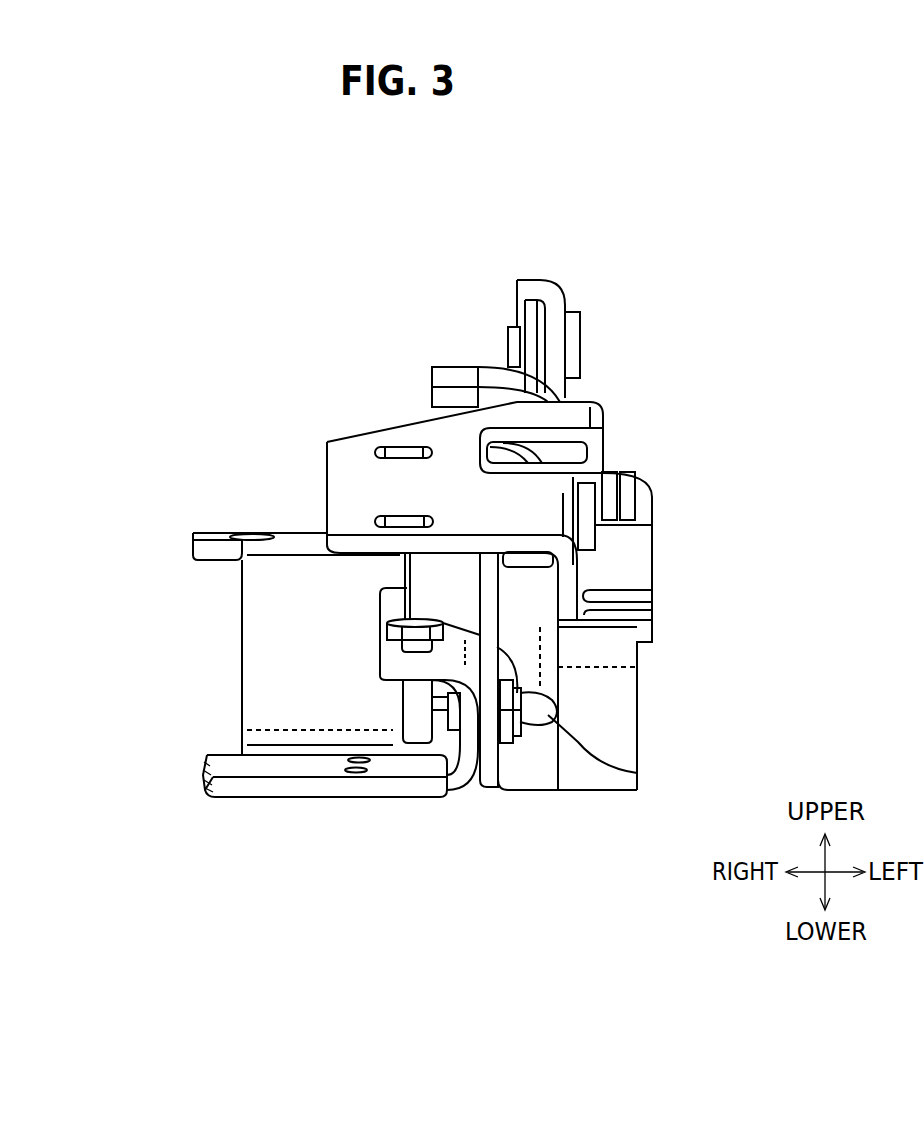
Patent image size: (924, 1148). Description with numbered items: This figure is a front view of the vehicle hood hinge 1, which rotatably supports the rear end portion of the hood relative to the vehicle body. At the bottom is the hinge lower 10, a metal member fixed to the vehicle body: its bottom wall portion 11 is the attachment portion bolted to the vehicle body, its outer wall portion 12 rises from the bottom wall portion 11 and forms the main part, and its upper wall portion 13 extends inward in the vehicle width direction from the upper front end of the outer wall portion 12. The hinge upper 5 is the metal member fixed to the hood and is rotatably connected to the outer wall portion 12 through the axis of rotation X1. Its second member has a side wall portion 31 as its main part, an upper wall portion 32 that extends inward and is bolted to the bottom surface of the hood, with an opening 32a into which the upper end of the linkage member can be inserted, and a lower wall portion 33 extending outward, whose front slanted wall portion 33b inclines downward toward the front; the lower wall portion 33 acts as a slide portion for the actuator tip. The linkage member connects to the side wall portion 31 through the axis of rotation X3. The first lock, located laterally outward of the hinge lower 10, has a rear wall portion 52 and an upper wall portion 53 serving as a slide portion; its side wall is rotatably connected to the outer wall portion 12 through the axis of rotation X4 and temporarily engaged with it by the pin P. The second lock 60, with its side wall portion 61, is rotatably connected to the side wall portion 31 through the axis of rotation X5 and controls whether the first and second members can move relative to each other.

The hinge 1 is at (684, 262).
The hinge upper 5 is at (513, 259).
The hinge lower 10 is at (186, 480).
The bottom wall portion 11 is at (253, 602).
The outer wall portion 12 is at (467, 717).
The upper wall portion 13 is at (390, 650).
The side wall portion 31 is at (567, 570).
The upper wall portion 32 is at (348, 452).
The opening 32a is at (515, 442).
The lower wall portion 33 is at (600, 423).
The front slanted wall portion 33b is at (633, 550).
The rear wall portion 52 is at (628, 718).
The upper wall portion 53 is at (632, 616).
The second lock 60 is at (612, 478).
The side wall portion 61 is at (627, 499).
The axis of rotation X1 is at (583, 341).
The axis of rotation X3 is at (590, 508).
The axis of rotation X4 is at (513, 733).
The axis of rotation X5 is at (625, 500).
The pin P is at (637, 773).